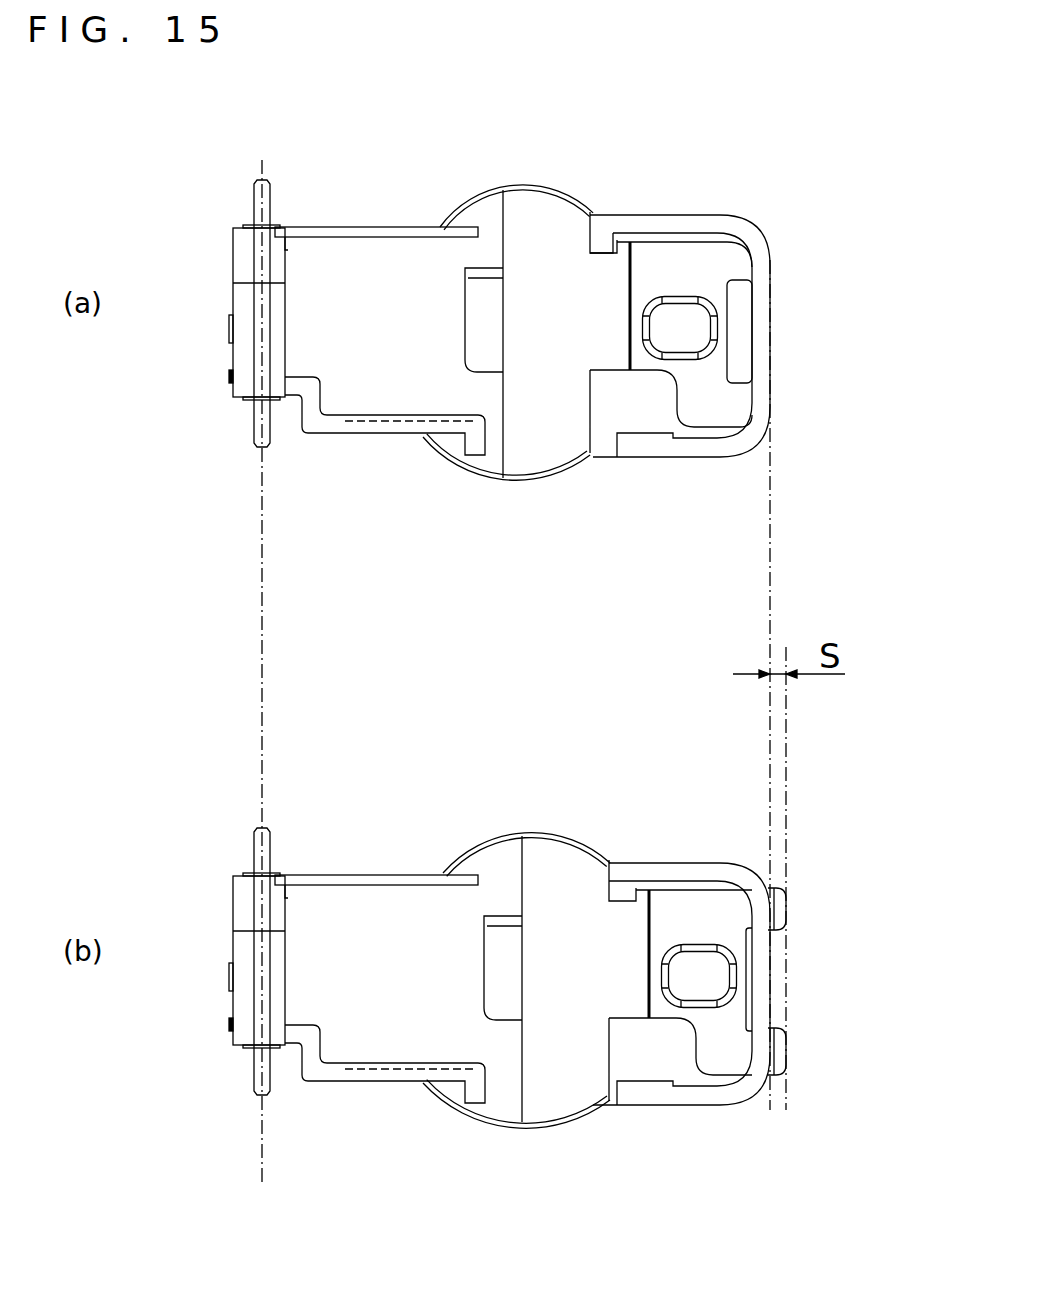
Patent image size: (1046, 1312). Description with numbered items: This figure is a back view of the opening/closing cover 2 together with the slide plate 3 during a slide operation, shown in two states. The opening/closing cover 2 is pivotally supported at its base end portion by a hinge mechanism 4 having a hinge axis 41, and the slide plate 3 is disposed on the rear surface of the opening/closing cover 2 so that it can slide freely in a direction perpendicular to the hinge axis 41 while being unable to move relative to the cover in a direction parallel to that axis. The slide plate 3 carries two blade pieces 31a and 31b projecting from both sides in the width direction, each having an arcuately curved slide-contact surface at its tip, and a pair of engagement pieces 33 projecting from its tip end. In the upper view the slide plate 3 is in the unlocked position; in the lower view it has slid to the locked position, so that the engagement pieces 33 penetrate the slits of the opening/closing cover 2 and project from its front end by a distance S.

The opening/closing cover 2 is at (383, 250).
The slide plate 3 is at (560, 240).
The hinge mechanism 4 is at (243, 350).
The hinge axis 41 is at (258, 202).
The blade piece 31a is at (535, 452).
The blade piece 31b is at (533, 208).
The engagement piece 33 is at (730, 260).